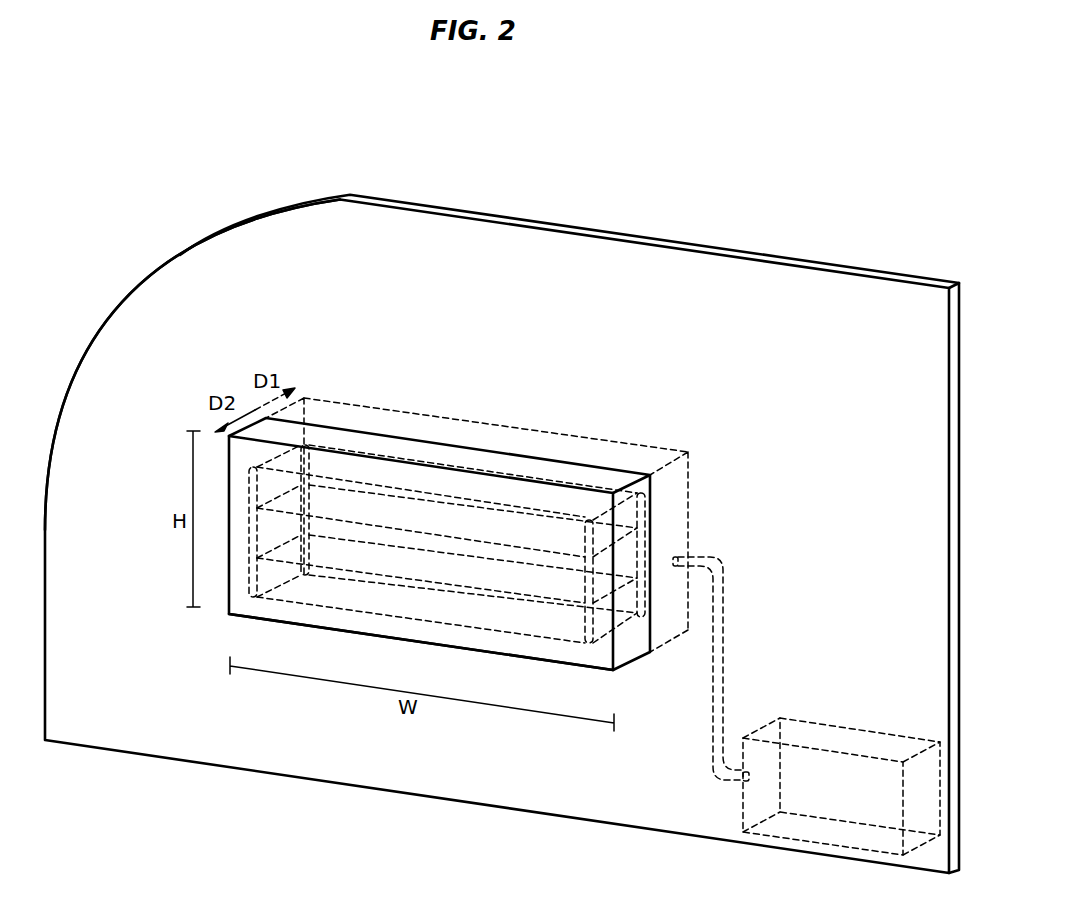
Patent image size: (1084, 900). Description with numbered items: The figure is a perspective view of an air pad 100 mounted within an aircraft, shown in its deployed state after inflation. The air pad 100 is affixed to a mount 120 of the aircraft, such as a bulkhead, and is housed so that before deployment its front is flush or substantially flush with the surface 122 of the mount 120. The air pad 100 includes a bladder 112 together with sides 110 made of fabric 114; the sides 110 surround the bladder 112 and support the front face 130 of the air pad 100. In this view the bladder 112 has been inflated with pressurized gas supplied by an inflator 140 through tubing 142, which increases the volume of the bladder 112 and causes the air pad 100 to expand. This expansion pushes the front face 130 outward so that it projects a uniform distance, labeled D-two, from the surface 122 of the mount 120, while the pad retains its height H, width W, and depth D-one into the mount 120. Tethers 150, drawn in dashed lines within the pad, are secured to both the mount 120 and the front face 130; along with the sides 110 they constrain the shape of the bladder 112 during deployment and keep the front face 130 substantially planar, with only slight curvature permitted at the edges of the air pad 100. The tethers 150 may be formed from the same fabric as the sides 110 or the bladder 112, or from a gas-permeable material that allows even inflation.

The air pad 100 is at (643, 445).
The sides 110 is at (465, 534).
The bladder 112 is at (488, 628).
The fabric 114 is at (558, 446).
The mount 120 is at (590, 228).
The surface 122 is at (204, 275).
The front face 130 is at (333, 620).
The inflator 140 is at (863, 740).
The tubing 142 is at (722, 636).
The tethers 150 is at (447, 565).